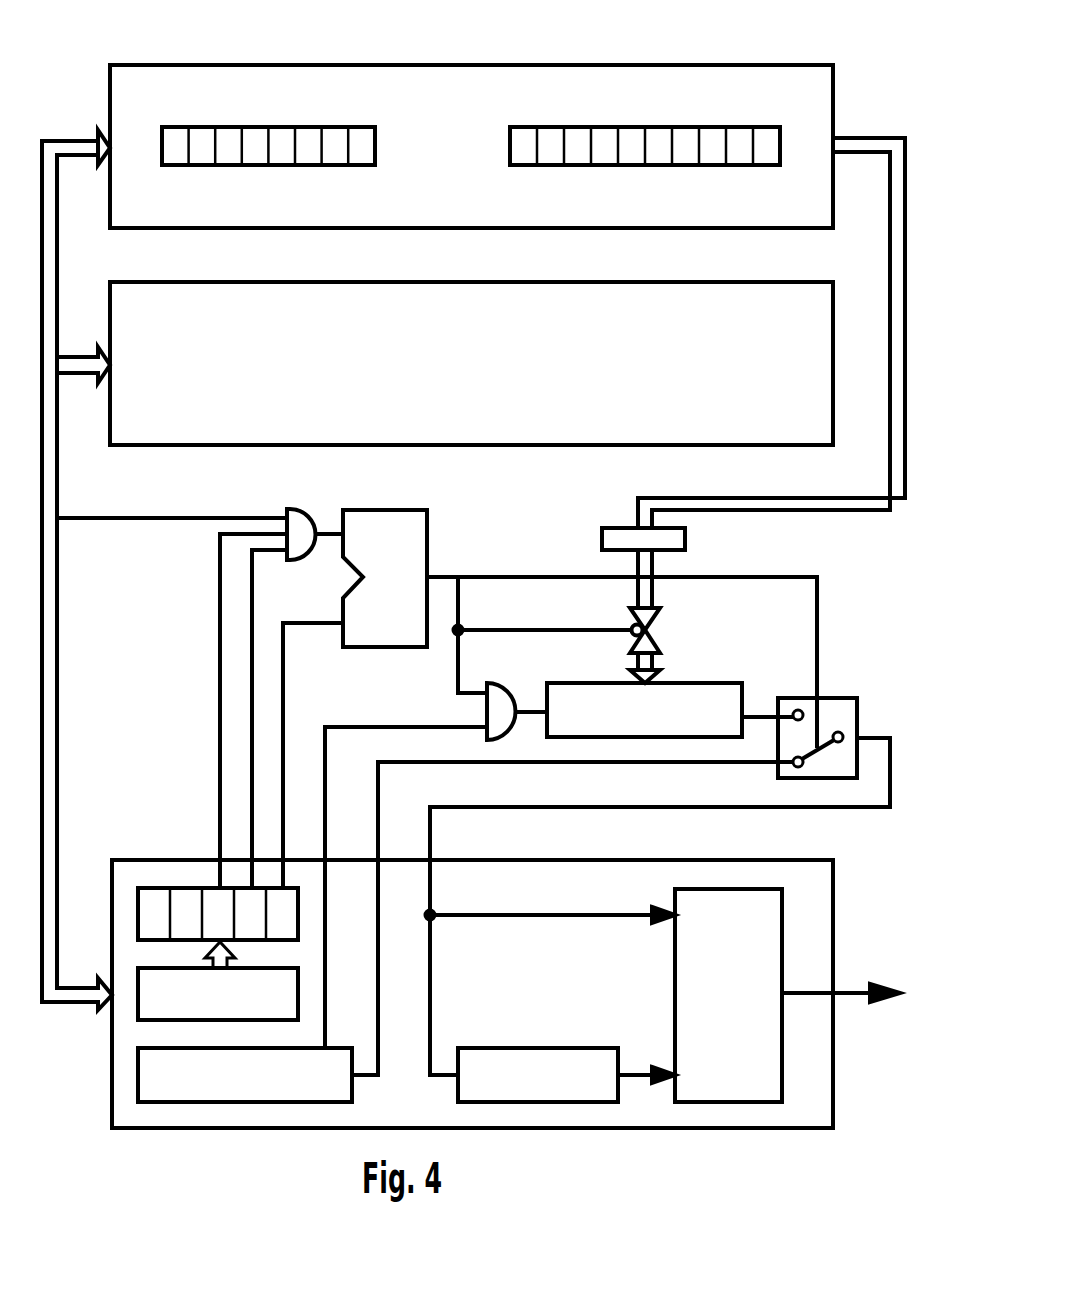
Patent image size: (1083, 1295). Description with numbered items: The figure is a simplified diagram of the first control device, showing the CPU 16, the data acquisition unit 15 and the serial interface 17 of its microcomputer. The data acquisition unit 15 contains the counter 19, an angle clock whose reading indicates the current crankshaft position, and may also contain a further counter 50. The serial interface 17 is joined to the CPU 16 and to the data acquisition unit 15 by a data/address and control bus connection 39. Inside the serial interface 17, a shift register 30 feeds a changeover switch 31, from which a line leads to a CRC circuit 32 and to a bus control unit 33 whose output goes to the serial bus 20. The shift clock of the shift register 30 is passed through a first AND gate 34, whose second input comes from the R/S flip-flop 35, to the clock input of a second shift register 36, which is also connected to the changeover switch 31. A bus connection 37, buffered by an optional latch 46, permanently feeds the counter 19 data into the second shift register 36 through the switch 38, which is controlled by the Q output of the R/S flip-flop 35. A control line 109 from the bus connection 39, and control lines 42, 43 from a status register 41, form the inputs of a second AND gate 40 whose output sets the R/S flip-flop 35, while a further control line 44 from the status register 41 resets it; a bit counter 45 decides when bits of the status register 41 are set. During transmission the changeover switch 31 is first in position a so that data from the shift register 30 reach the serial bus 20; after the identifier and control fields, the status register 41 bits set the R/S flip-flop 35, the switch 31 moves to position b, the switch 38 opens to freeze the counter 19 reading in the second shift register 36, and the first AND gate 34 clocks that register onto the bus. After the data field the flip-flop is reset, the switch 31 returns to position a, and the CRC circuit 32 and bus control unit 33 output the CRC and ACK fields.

The data acquisition unit 15 is at (733, 82).
The CPU 16 is at (471, 363).
The serial interface 17 is at (805, 1115).
The counter 19 is at (770, 125).
The serial bus 20 is at (858, 985).
The shift register 30 is at (245, 1075).
The changeover switch 31 is at (838, 705).
The CRC circuit 32 is at (525, 1055).
The bus control unit 33 is at (682, 975).
The first AND gate 34 is at (500, 700).
The R/S flip-flop 35 is at (390, 520).
The second shift register 36 is at (728, 690).
The bus connection 37 is at (875, 510).
The switch 38 is at (648, 626).
The data/address and control bus connection 39 is at (57, 553).
The second AND gate 40 is at (295, 515).
The status register 41 is at (152, 886).
The control line 42 is at (216, 603).
The control line 43 is at (255, 577).
The control line 44 is at (285, 668).
The bit counter 45 is at (218, 981).
The latch 46 is at (625, 535).
The further counter 50 is at (363, 125).
The control line 109 is at (178, 517).